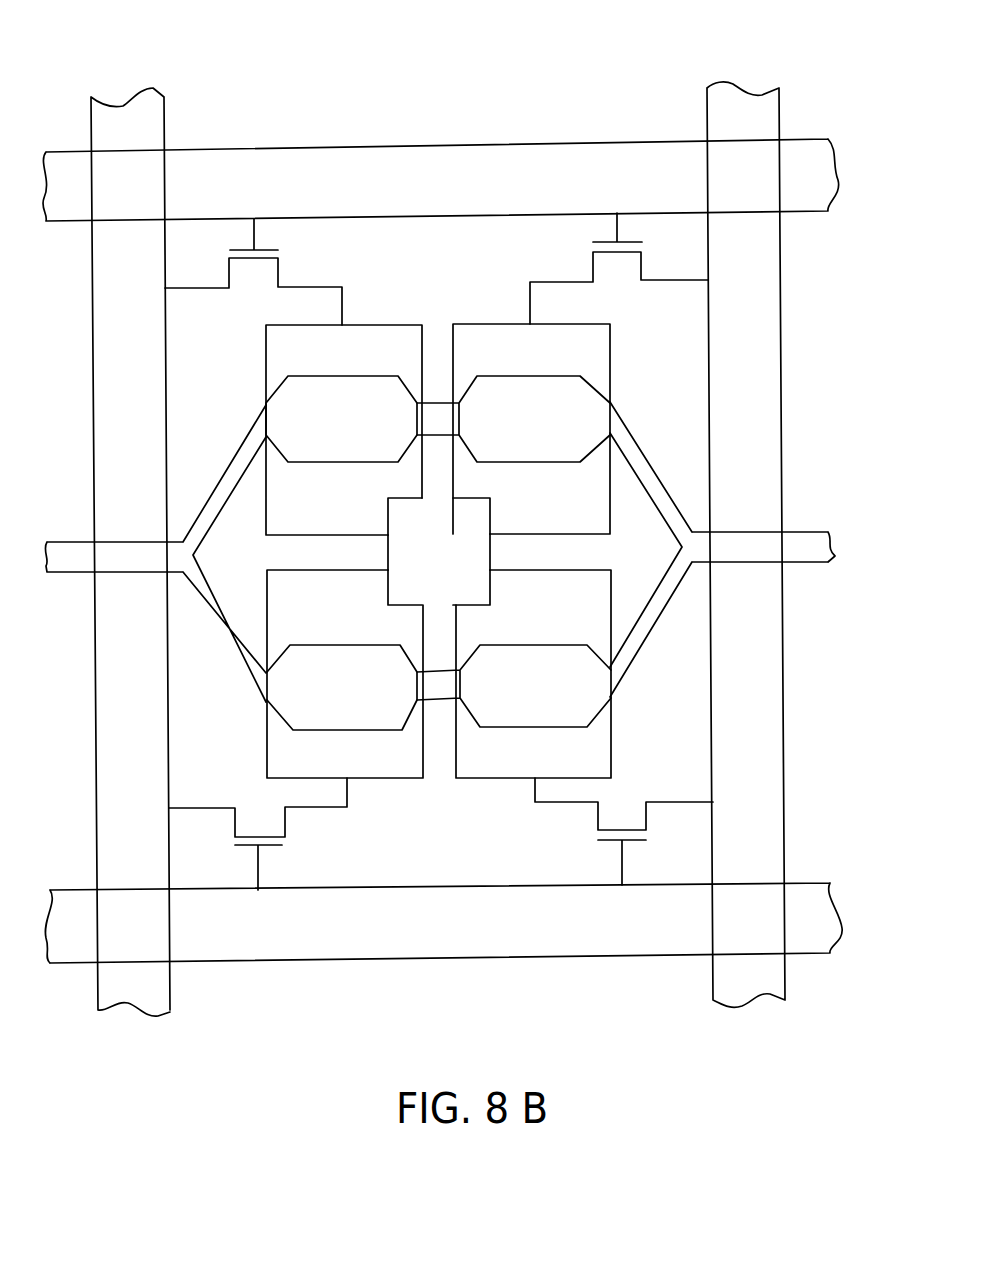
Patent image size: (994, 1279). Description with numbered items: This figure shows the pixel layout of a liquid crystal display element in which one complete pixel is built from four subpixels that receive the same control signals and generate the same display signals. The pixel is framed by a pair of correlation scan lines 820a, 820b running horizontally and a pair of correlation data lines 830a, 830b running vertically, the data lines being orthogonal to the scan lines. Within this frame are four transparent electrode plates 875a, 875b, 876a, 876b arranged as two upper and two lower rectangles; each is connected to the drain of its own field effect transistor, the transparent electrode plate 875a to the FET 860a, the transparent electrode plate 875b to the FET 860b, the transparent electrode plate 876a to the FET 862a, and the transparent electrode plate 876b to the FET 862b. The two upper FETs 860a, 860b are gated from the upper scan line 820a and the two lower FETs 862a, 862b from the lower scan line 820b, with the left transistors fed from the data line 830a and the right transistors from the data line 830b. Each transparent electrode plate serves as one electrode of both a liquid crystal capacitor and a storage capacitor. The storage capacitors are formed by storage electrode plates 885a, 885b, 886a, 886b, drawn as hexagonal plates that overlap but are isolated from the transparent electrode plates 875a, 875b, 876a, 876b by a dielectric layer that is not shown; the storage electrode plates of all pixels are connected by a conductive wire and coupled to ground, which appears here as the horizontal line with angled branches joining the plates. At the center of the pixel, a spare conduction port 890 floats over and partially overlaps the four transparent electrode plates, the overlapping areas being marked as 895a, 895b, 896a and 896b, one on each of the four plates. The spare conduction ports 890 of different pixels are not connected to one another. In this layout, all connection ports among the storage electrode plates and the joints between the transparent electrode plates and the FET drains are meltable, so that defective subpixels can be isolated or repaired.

The correlation scan line 820a is at (802, 150).
The correlation scan line 820b is at (820, 942).
The correlation data line 830a is at (118, 107).
The correlation data line 830b is at (738, 105).
The FET 860a is at (240, 275).
The FET 860b is at (630, 268).
The FET 862a is at (252, 827).
The FET 862b is at (630, 817).
The transparent electrode plate 875a is at (383, 325).
The transparent electrode plate 875b is at (478, 325).
The transparent electrode plate 876a is at (387, 778).
The transparent electrode plate 876b is at (505, 778).
The storage electrode plate 885a is at (341, 419).
The storage electrode plate 885b is at (513, 419).
The storage electrode plate 886a is at (342, 687).
The storage electrode plate 886b is at (514, 686).
The overlapping area 895a is at (400, 513).
The overlapping area 895b is at (473, 511).
The overlapping area 896a is at (407, 588).
The overlapping area 896b is at (482, 588).
The spare conduction port 890 is at (442, 597).